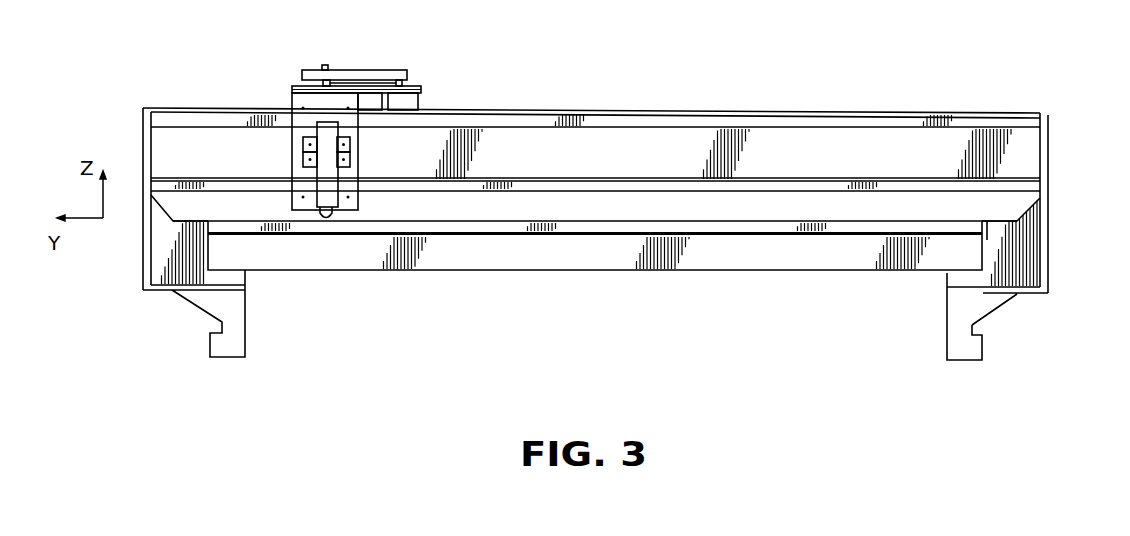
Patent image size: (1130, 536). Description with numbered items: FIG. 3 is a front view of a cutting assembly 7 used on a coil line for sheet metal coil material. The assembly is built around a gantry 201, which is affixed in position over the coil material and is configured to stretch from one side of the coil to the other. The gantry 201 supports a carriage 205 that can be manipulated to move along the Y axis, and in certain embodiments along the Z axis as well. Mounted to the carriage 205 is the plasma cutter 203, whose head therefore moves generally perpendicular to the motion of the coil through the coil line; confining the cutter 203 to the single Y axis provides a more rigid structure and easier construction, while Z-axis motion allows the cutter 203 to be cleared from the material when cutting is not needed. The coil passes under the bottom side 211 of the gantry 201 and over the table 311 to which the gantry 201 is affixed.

The three-dimensional printing apparatus 7 is at (527, 305).
The gantry 201 is at (1032, 113).
The plasma cutter 203 is at (322, 122).
The carriage 205 is at (353, 172).
The bottom side 211 is at (1002, 194).
The table 311 is at (808, 272).